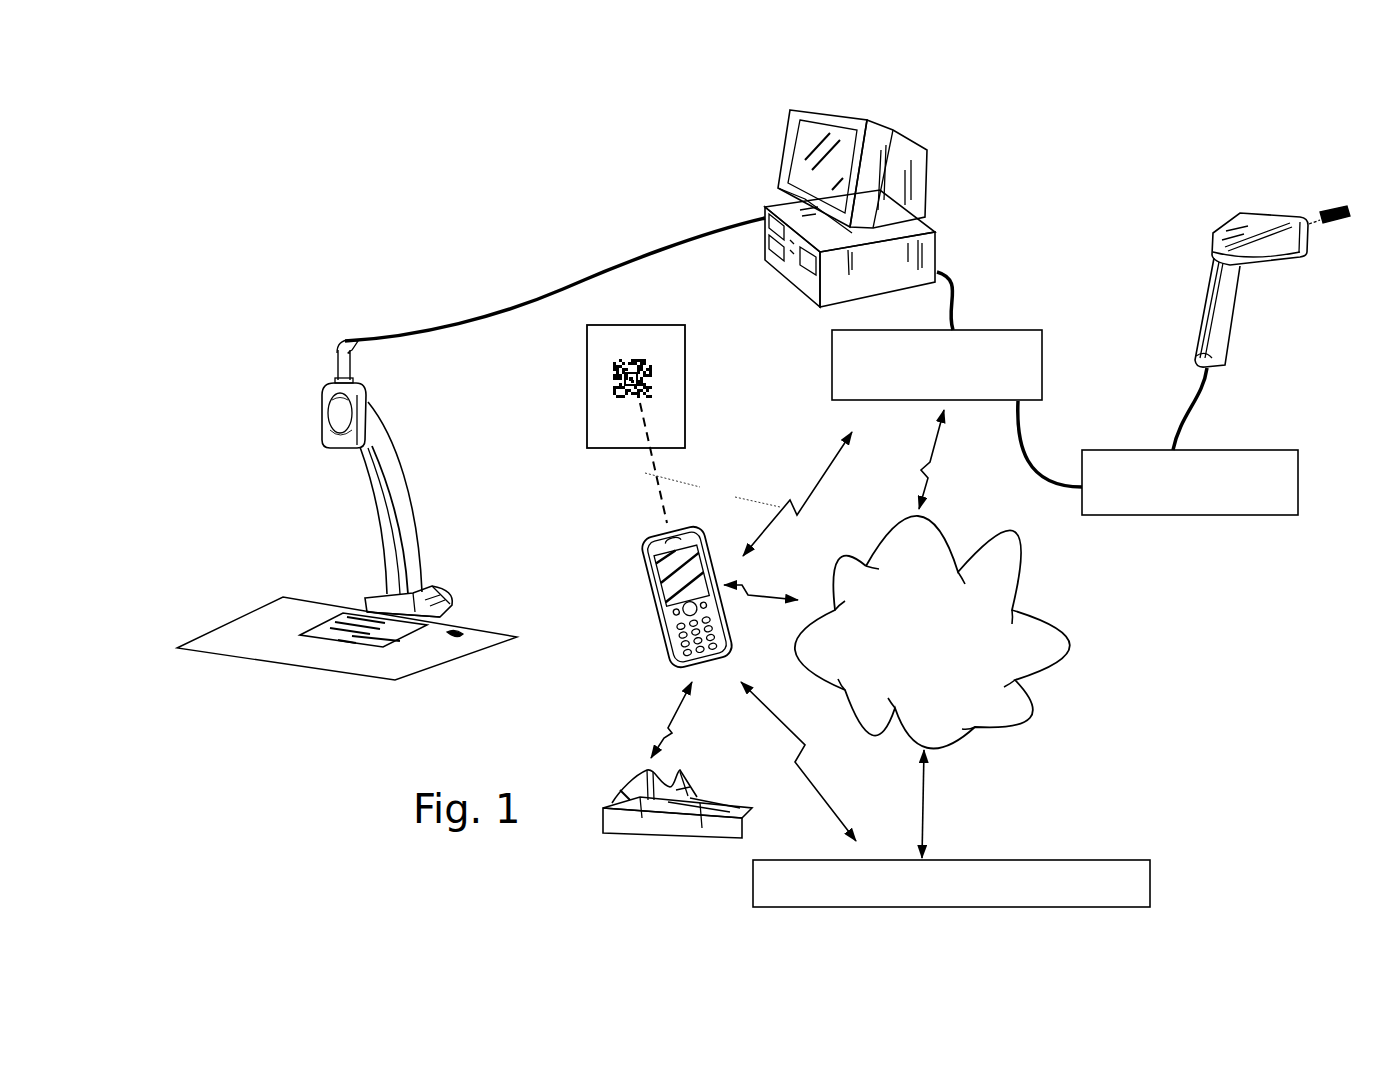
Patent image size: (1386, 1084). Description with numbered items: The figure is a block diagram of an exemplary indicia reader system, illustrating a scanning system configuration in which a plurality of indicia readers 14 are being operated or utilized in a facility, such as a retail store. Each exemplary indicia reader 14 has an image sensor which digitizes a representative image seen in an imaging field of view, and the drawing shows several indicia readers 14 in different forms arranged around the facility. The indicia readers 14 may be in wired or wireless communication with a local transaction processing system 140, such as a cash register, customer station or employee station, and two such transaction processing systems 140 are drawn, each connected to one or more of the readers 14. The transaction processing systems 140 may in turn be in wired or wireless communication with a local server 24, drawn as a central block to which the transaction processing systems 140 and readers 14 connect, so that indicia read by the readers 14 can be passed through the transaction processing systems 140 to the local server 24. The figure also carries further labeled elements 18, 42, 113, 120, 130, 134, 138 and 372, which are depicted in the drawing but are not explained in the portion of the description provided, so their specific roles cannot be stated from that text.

The indicia reader 14 is at (1280, 210).
The document with bar code 18 is at (397, 637).
The local server 24 is at (990, 330).
The table / counter surface 42 is at (332, 660).
The two-dimensional bar code 113 is at (685, 392).
The network 120 is at (1030, 723).
The transaction processing system overview 130 is at (552, 860).
The remote/web server 134 is at (1110, 860).
The phone dock / cradle 138 is at (657, 845).
The local transaction processing system 140 is at (908, 253).
The display / monitor 372 is at (828, 155).